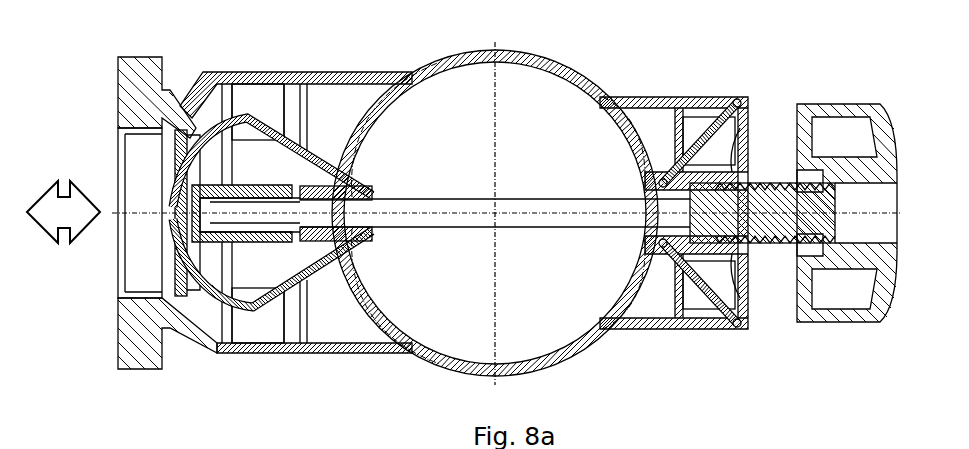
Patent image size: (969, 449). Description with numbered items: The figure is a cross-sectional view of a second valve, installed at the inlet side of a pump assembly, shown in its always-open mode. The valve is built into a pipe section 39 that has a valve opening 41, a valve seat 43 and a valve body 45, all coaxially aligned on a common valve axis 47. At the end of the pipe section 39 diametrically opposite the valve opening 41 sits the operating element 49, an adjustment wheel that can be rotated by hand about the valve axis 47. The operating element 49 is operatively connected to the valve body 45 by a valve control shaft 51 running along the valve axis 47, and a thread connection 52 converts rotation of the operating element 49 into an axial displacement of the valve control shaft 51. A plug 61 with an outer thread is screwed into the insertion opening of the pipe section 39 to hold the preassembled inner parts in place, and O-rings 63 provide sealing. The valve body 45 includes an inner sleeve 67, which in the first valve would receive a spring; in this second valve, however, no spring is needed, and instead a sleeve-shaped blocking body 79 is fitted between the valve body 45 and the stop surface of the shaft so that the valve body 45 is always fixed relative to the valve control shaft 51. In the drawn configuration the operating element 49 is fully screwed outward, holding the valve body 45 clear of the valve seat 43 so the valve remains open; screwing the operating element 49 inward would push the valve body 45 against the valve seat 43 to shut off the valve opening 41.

The pipe section 39 is at (558, 70).
The valve opening 41 is at (138, 268).
The valve seat 43 is at (193, 140).
The valve body 45 is at (280, 142).
The valve axis 47 is at (548, 212).
The operating element 49 is at (840, 105).
The valve control shaft 51 is at (418, 221).
The thread connection 52 is at (763, 237).
The plug 61 is at (707, 117).
The O-rings 63 is at (228, 119).
The inner sleeve 67 is at (262, 234).
The blocking body 79 is at (320, 190).